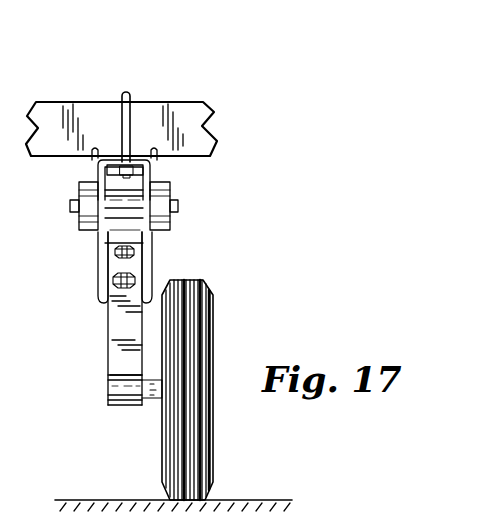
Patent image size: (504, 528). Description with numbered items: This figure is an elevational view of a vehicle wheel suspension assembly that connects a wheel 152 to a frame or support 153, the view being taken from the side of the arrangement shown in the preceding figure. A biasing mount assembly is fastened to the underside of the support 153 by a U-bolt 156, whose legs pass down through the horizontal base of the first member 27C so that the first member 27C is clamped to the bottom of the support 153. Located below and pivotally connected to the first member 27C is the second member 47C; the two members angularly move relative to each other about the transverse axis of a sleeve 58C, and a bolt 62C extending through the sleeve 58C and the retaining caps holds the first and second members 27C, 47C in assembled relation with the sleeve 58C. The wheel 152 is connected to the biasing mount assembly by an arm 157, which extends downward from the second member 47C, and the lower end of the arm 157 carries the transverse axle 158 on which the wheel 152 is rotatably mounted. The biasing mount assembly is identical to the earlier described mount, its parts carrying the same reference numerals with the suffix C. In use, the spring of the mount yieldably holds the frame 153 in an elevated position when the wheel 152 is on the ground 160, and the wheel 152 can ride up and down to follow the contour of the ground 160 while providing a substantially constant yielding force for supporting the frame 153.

The wheel 152 is at (192, 342).
The frame or support 153 is at (173, 110).
The U-bolt 156 is at (123, 101).
The arm 157 is at (115, 328).
The transverse axle 158 is at (112, 392).
The ground 160 is at (94, 498).
The first member 27C is at (152, 166).
The second member 47C is at (153, 250).
The sleeve 58C is at (143, 206).
The bolt 62C is at (72, 203).